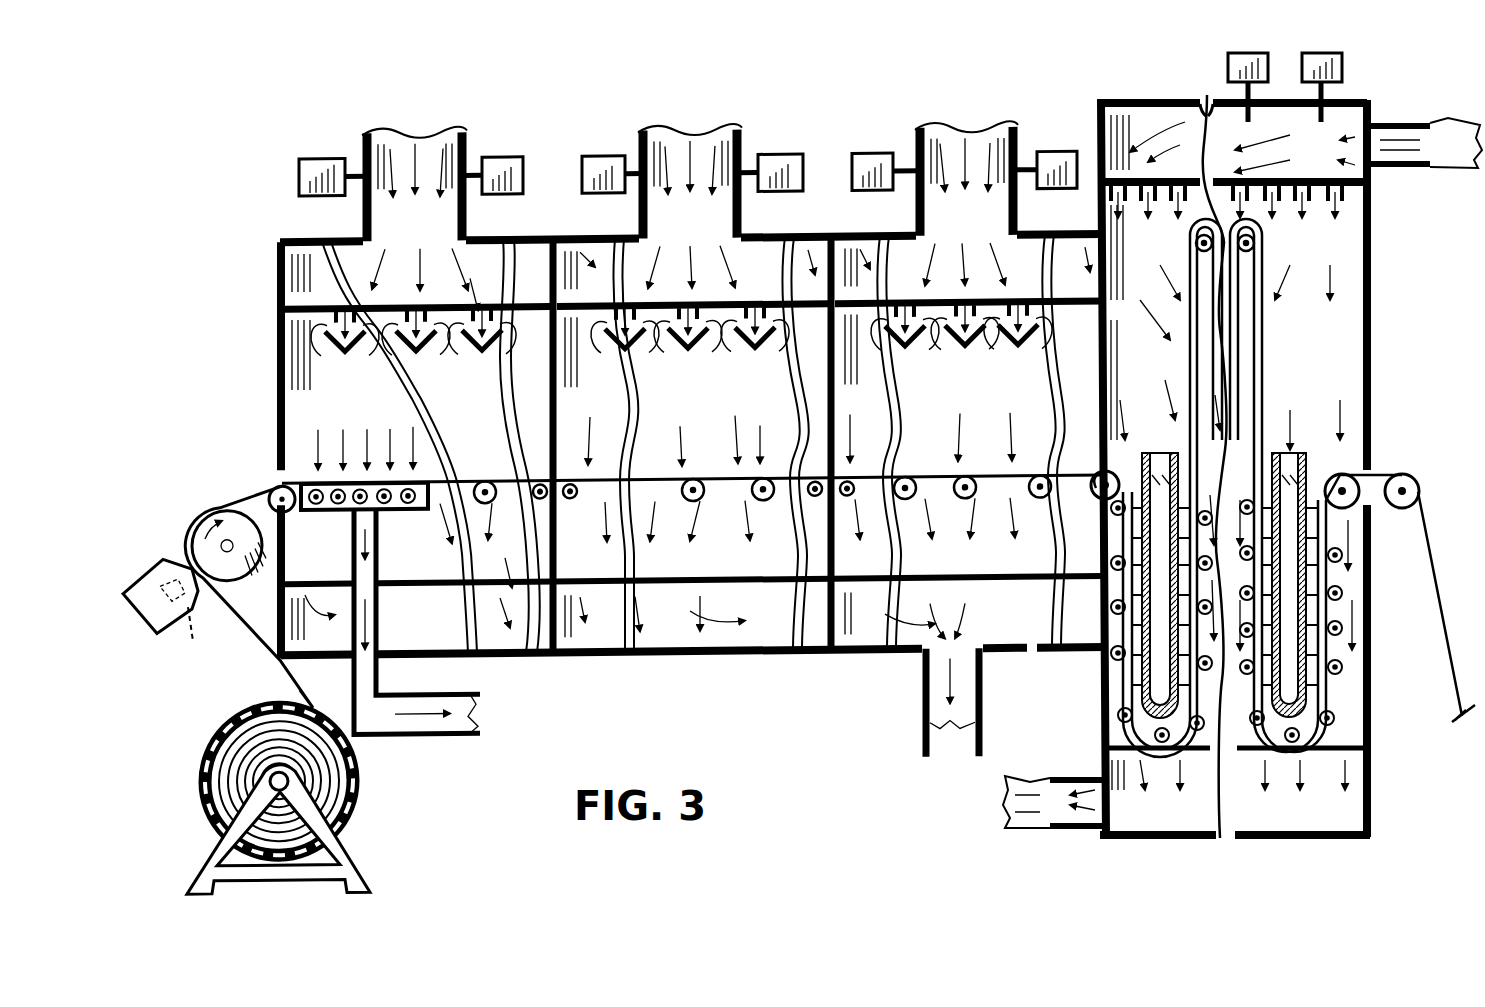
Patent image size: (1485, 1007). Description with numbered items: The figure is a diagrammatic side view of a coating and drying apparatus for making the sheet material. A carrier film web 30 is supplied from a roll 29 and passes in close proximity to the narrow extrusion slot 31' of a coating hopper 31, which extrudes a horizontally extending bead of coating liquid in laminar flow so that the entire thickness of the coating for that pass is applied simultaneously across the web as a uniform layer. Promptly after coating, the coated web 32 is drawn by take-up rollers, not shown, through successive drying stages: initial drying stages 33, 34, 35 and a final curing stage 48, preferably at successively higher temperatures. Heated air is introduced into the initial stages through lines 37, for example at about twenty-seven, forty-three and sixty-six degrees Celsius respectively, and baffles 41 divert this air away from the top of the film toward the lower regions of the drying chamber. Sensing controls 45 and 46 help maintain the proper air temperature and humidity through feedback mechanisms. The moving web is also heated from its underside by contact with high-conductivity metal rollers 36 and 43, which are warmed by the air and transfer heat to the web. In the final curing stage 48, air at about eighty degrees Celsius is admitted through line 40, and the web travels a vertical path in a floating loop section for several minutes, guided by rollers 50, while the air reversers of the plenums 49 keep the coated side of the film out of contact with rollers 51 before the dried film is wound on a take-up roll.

The roll 29 is at (358, 785).
The film web 30 is at (272, 650).
The coating hopper 31 is at (157, 580).
The extrusion slot 31' is at (200, 632).
The coated web 32 is at (235, 508).
The initial drying stage 33 is at (392, 436).
The initial drying stage 34 is at (712, 432).
The initial drying stage 35 is at (990, 431).
The metal roller 36 is at (350, 528).
The line 37 is at (372, 132).
The line 40 is at (1400, 125).
The baffle 41 is at (360, 355).
The metal roller 43 is at (463, 518).
The sensing control 45 is at (320, 165).
The sensing control 46 is at (500, 159).
The final curing stage 48 is at (1320, 326).
The plenum 49 is at (1165, 448).
The roller 50 is at (1190, 252).
The roller 51 is at (1105, 690).